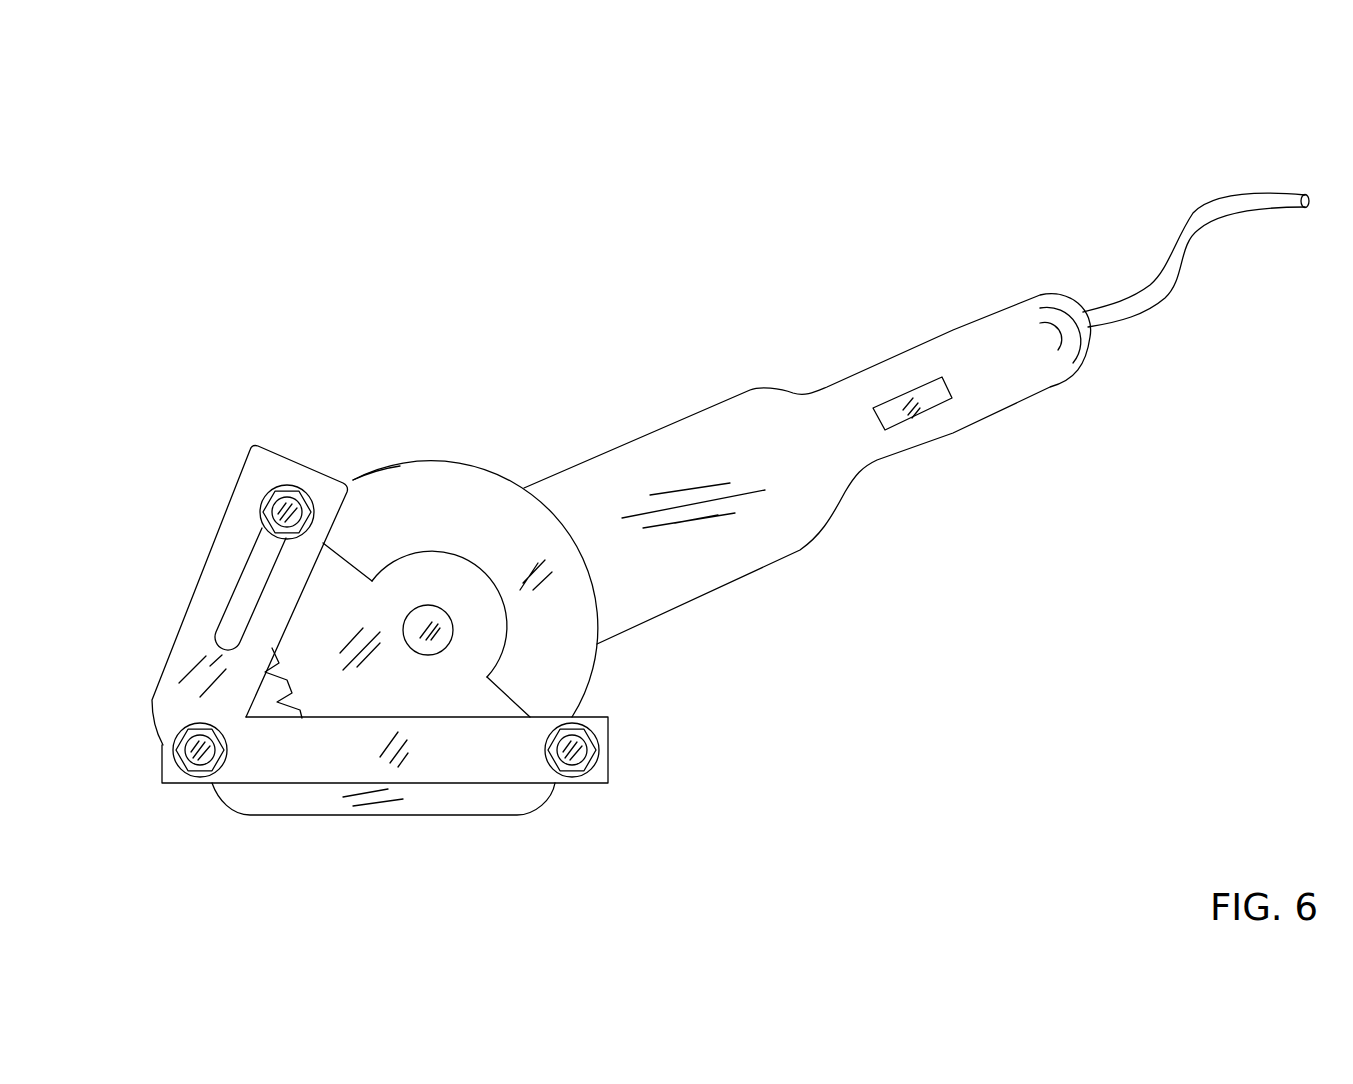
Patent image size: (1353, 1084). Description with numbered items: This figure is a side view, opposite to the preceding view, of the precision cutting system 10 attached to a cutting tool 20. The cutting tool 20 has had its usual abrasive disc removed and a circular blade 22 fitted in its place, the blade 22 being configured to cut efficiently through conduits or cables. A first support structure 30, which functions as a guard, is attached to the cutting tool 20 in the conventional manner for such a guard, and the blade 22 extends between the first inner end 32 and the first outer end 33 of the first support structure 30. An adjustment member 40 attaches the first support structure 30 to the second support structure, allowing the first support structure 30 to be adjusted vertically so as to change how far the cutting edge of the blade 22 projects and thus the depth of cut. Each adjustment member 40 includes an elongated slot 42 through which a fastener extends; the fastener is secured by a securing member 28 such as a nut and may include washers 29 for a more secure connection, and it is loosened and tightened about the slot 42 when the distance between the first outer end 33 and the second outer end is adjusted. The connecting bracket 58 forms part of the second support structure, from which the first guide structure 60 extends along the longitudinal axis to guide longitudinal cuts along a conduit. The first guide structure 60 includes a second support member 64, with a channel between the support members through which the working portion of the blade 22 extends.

The precision cutting system 10 is at (233, 143).
The cutting tool 20 is at (814, 551).
The blade 22 is at (400, 695).
The securing member 28 is at (166, 735).
The washer 29 is at (259, 494).
The first support structure 30 is at (460, 642).
The first inner end 32 is at (575, 715).
The first outer end 33 is at (357, 475).
The adjustment member 40 is at (221, 596).
The slot 42 is at (225, 603).
The connecting bracket 58 is at (407, 830).
The first guide structure 60 is at (366, 830).
The second support member 64 is at (327, 805).